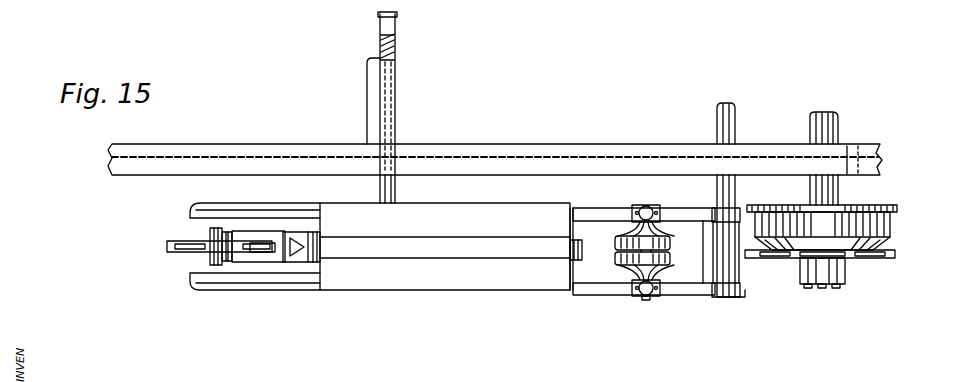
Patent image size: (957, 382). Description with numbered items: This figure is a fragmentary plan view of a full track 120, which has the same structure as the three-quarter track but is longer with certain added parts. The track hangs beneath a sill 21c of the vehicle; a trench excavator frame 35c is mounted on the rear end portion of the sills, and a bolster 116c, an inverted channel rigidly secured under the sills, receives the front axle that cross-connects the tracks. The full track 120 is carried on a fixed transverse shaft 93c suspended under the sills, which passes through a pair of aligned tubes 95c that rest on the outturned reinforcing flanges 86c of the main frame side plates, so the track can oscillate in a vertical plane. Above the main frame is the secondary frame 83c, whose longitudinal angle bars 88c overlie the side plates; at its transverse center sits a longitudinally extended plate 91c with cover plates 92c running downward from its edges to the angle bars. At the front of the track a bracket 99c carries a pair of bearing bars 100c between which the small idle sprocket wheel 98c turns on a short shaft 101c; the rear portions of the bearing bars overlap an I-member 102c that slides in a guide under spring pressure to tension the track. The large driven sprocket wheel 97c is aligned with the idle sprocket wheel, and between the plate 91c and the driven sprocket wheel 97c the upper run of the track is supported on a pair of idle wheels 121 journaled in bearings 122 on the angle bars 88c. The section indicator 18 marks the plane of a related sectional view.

The sill 21c is at (885, 156).
The bolster 116c is at (396, 128).
The cover plate 92c is at (485, 212).
The plate 91c is at (500, 243).
The reinforcing flange 86c is at (266, 213).
The bearing bar 100c is at (225, 232).
The short shaft 101c is at (213, 264).
The idle sprocket wheel 98c is at (198, 243).
The bracket 99c is at (307, 237).
The I-member 102c is at (313, 258).
The longitudinal angle bar 88c is at (600, 213).
The secondary frame 83c is at (598, 296).
The bearing 122 is at (648, 208).
The idle wheel 121 is at (660, 246).
The fixed transverse shaft 93c is at (735, 116).
The tube 95c is at (729, 293).
The full track 120 is at (750, 296).
The trench excavator frame 35c is at (853, 153).
The driven sprocket wheel 97c is at (897, 253).
The section line 18 is at (137, 215).